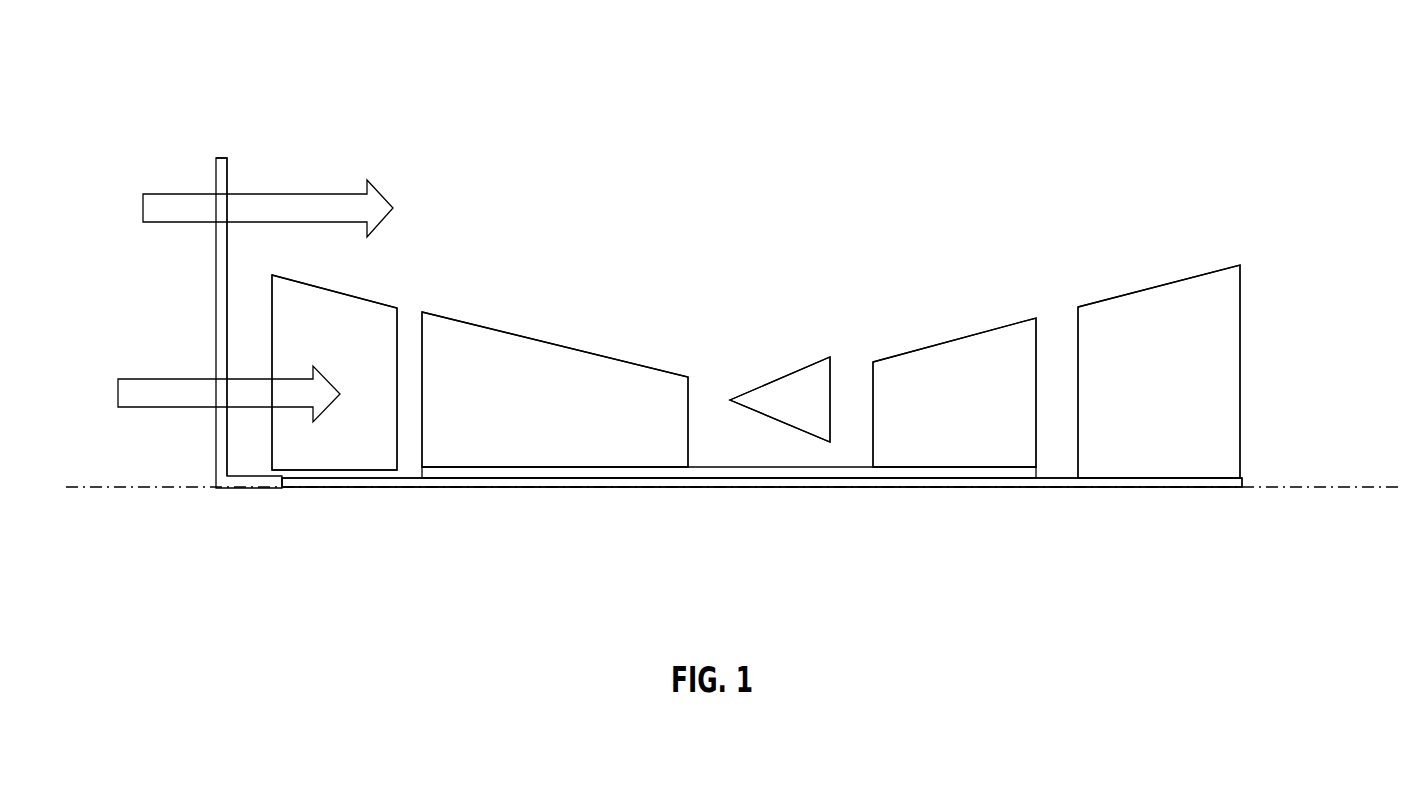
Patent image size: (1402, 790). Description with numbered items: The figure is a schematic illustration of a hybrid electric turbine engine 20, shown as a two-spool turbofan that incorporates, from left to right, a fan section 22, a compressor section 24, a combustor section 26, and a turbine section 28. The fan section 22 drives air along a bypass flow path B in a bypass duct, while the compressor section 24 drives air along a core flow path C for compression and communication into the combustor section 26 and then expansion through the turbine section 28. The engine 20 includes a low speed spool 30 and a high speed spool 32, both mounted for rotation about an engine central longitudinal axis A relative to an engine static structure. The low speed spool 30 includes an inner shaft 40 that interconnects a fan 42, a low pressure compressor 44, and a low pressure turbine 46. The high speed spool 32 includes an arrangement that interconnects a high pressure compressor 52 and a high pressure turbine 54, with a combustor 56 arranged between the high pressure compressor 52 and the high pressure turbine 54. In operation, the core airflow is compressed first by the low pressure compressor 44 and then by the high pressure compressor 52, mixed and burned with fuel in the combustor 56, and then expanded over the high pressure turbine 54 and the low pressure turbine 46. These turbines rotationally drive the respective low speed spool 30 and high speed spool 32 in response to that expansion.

The hybrid electric turbine engine 20 is at (470, 82).
The fan section 22 is at (228, 153).
The compressor section 24 is at (455, 218).
The combustor section 26 is at (748, 295).
The turbine section 28 is at (1028, 240).
The low speed spool 30 is at (310, 490).
The high speed spool 32 is at (697, 488).
The inner shaft 40 is at (440, 490).
The fan 42 is at (216, 285).
The low pressure compressor 44 is at (385, 320).
The low pressure turbine 46 is at (1147, 300).
The high pressure compressor 52 is at (580, 372).
The high pressure turbine 54 is at (970, 358).
The combustor 56 is at (813, 385).
The engine central longitudinal axis A is at (113, 487).
The bypass flow path B is at (275, 205).
The core flow path C is at (132, 378).